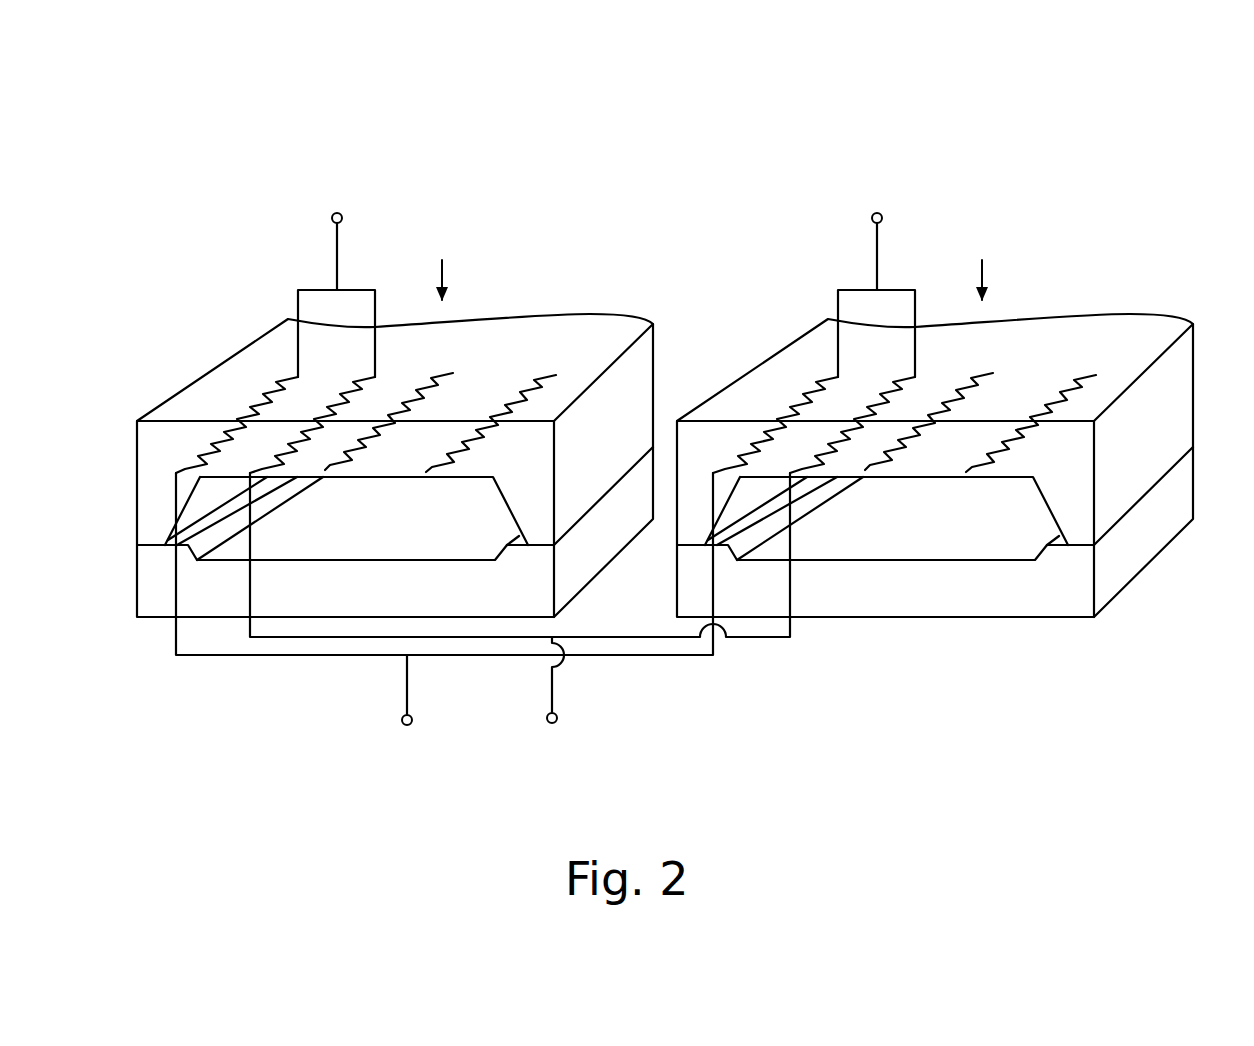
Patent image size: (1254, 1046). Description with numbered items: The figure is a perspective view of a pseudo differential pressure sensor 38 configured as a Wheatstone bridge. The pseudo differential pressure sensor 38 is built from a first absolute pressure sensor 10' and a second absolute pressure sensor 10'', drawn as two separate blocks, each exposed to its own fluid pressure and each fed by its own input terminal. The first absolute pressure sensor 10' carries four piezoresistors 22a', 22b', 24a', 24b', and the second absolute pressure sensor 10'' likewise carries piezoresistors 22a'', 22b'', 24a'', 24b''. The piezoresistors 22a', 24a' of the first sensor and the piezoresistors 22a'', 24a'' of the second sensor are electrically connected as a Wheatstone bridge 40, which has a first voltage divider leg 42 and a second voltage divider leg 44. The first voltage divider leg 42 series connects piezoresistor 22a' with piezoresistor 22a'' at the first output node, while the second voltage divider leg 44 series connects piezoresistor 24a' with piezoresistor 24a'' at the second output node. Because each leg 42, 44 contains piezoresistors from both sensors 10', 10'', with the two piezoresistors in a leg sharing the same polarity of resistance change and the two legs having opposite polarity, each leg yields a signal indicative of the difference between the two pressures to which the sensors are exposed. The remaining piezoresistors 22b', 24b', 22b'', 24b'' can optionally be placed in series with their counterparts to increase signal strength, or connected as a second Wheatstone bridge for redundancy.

The pseudo differential pressure sensor 38 is at (1049, 142).
The first absolute pressure sensor 10' is at (395, 399).
The second absolute pressure sensor 10'' is at (935, 399).
The piezoresistor 22a' is at (229, 385).
The piezoresistor 24a' is at (312, 405).
The piezoresistor 24b' is at (414, 401).
The piezoresistor 22b' is at (512, 401).
The piezoresistor 22a'' is at (775, 385).
The piezoresistor 24a'' is at (852, 405).
The piezoresistor 24b'' is at (957, 401).
The piezoresistor 22b'' is at (1059, 401).
The Wheatstone bridge 40 is at (296, 690).
The first voltage divider leg 42 is at (233, 657).
The second voltage divider leg 44 is at (767, 639).